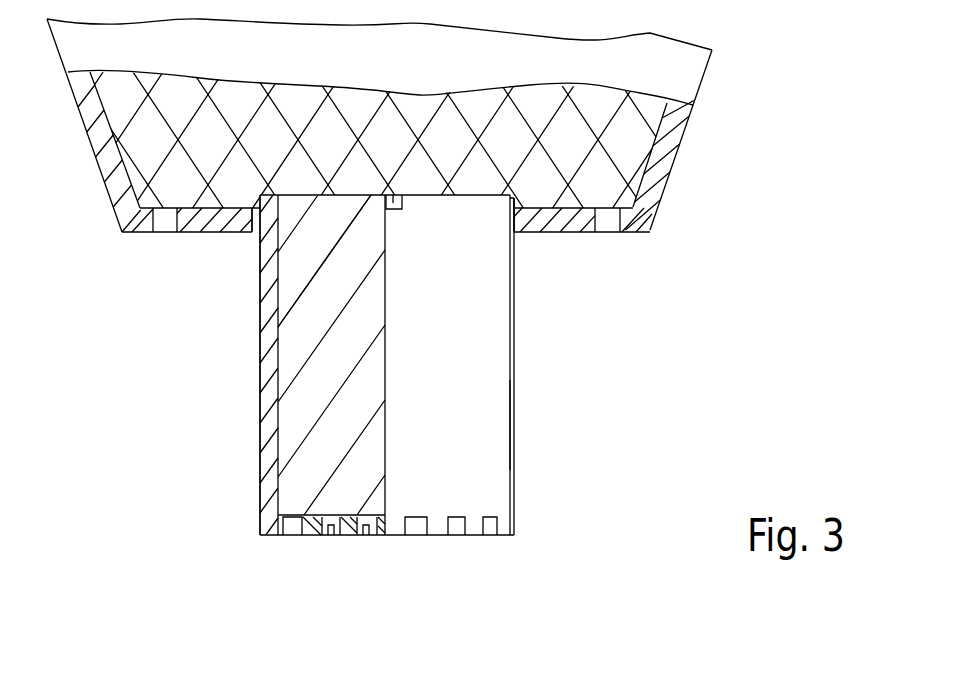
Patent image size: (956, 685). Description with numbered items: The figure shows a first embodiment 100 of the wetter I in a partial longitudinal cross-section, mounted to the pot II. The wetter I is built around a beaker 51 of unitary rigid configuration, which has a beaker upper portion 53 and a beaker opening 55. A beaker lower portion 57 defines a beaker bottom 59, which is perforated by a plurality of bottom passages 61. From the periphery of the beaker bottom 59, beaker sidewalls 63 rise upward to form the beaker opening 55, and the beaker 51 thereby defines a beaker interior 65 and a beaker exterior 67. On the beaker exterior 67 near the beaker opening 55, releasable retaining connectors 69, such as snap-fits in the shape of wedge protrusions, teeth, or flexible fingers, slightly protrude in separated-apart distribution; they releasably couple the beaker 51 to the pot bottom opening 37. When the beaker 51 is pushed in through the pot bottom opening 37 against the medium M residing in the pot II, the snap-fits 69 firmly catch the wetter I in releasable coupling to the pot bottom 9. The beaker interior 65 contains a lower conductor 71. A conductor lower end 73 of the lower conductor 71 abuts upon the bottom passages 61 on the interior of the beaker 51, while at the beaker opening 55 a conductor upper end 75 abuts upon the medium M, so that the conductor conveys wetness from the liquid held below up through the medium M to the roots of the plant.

The pot bottom 9 is at (578, 258).
The pot bottom opening 37 is at (513, 240).
The beaker 51 is at (513, 473).
The beaker upper portion 53 is at (167, 272).
The beaker opening 55 is at (335, 176).
The beaker lower portion 57 is at (169, 488).
The beaker bottom 59 is at (505, 537).
The bottom passages 61 is at (418, 528).
The beaker sidewalls 63 is at (262, 460).
The beaker interior 65 is at (320, 390).
The beaker exterior 67 is at (132, 370).
The releasable retaining connectors 69 is at (258, 200).
The lower conductor 71 is at (318, 337).
The conductor lower end 73 is at (300, 490).
The conductor upper end 75 is at (332, 213).
The first embodiment 100 is at (453, 352).
The wetter I is at (513, 425).
The pot II is at (680, 142).
The medium M is at (594, 161).